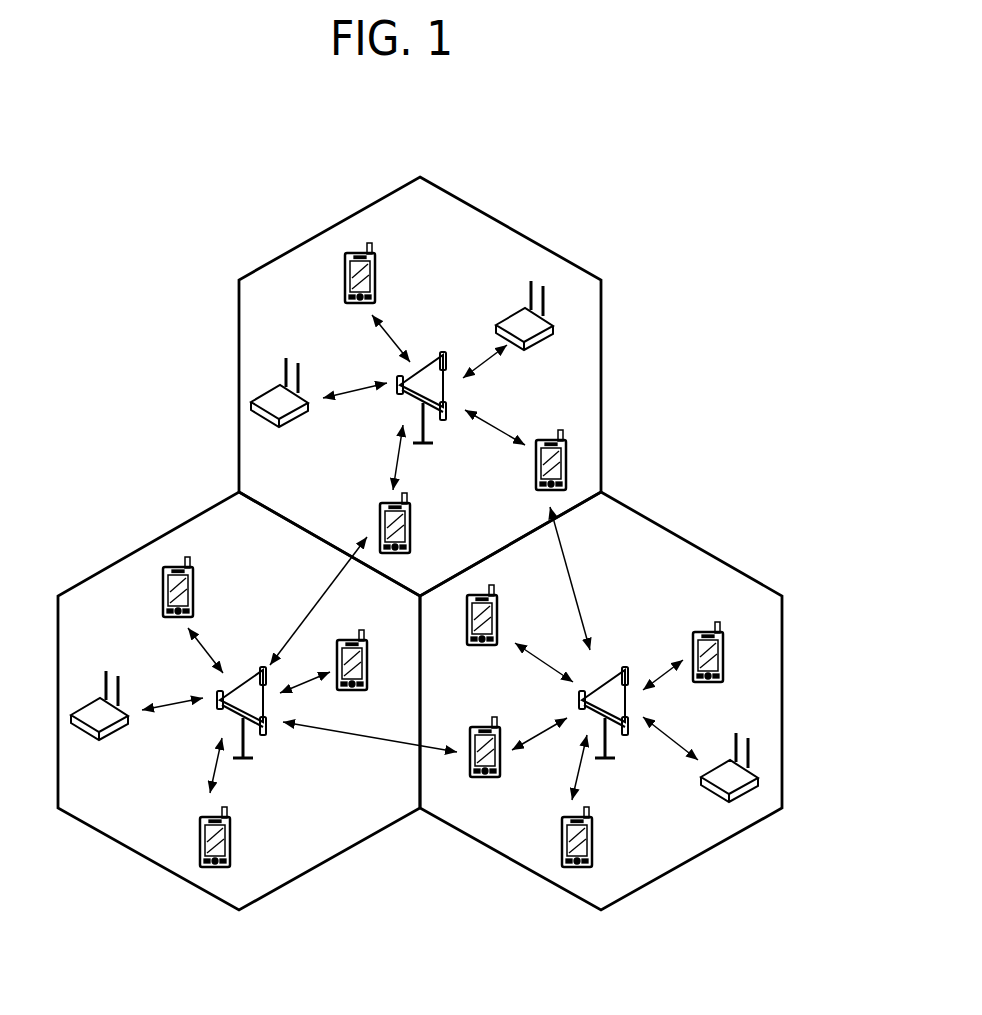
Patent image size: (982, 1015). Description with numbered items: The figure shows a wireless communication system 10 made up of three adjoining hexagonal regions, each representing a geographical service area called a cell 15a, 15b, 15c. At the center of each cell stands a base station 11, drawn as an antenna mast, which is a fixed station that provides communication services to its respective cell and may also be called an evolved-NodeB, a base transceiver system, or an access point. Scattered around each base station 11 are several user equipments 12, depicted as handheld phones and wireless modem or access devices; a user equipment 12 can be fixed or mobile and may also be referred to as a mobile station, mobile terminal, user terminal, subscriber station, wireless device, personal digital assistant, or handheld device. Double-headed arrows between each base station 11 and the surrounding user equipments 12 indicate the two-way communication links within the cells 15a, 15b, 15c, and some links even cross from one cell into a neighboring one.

The wireless communication system 10 is at (420, 543).
The base station 11 is at (435, 365).
The user equipment 12 is at (376, 275).
The cell 15a is at (601, 375).
The cell 15b is at (723, 555).
The cell 15c is at (125, 557).